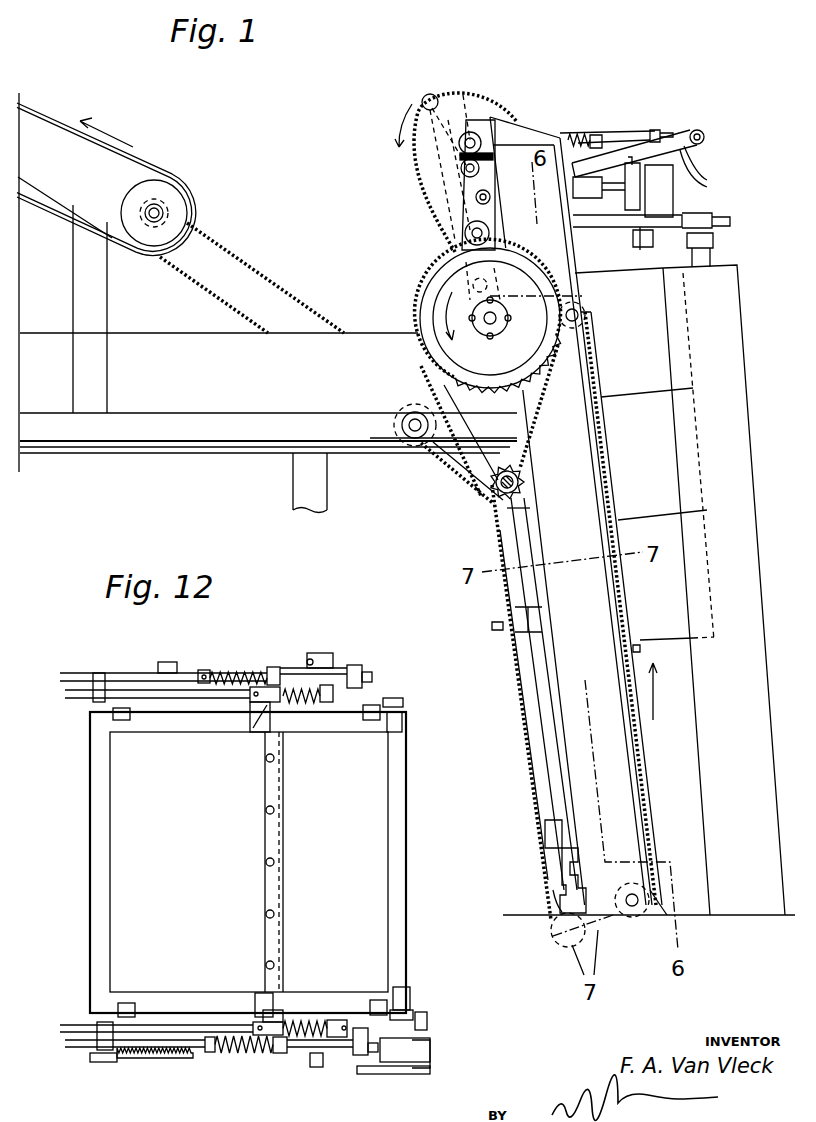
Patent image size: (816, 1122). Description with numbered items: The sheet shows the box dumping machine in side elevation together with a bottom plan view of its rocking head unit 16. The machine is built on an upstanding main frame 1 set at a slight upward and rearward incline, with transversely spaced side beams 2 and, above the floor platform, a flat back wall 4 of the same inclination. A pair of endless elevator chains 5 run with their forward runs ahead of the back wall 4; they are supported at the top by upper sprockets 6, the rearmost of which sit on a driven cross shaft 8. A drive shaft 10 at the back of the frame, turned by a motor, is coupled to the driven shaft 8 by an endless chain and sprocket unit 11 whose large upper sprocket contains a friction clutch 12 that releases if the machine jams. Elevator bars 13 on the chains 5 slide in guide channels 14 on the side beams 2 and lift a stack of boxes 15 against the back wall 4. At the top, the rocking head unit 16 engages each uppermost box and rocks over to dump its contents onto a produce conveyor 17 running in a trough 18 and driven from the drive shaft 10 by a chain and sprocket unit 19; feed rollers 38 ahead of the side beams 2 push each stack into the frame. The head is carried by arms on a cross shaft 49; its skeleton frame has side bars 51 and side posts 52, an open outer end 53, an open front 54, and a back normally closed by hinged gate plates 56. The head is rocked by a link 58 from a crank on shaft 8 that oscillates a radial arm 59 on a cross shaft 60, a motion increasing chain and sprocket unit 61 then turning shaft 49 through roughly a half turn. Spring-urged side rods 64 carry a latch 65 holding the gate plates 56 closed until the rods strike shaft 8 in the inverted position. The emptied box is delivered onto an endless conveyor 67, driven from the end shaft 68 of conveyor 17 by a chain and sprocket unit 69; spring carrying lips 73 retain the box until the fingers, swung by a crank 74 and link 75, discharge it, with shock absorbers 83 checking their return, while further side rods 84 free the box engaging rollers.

In FIG. 1, the main frame 1 is at (556, 116).
In FIG. 1, the side beams 2 is at (540, 770).
In FIG. 1, the back wall 4 is at (537, 716).
In FIG. 1, the elevator chains 5 is at (530, 812).
In FIG. 1, the upper sprockets 6 is at (527, 256).
In FIG. 1, the driven cross shaft 8 is at (493, 322).
In FIG. 1, the drive shaft 10 is at (500, 490).
In FIG. 1, the endless chain and sprocket unit 11 is at (537, 441).
In FIG. 1, the friction clutch 12 is at (437, 328).
In FIG. 1, the elevator bars 13 is at (493, 632).
In FIG. 1, the guide channels 14 is at (646, 777).
In FIG. 1, the stack of boxes 15 is at (710, 658).
In FIG. 1, the rocking head unit 16 is at (708, 157).
In FIG. 12, the rocking head unit 16 is at (424, 991).
In FIG. 1, the produce conveyor 17 is at (242, 455).
In FIG. 1, the trough 18 is at (163, 352).
In FIG. 1, the endless chain and sprocket unit 19 is at (449, 478).
In FIG. 1, the feed rollers 38 is at (733, 292).
In FIG. 1, the cross shaft 49 is at (460, 240).
In FIG. 1, the side bars 51 is at (578, 152).
In FIG. 12, the side bars 51 is at (385, 685).
In FIG. 1, the side posts 52 is at (641, 240).
In FIG. 1, the open outer end 53 is at (698, 204).
In FIG. 1, the open front 54 is at (610, 259).
In FIG. 12, the gate plates 56 is at (133, 899).
In FIG. 1, the link 58 is at (433, 168).
In FIG. 1, the radial oscillating arm 59 is at (466, 92).
In FIG. 1, the cross shaft 60 is at (473, 140).
In FIG. 1, the motion increasing endless chain and sprocket unit 61 is at (433, 202).
In FIG. 12, the side rods 64 is at (198, 700).
In FIG. 12, the latch 65 is at (262, 706).
In FIG. 1, the endless conveyor 67 is at (150, 170).
In FIG. 1, the end shaft 68 is at (413, 436).
In FIG. 1, the endless chain and sprocket unit 69 is at (243, 263).
In FIG. 1, the spring carrying lips 73 is at (705, 182).
In FIG. 12, the crank 74 is at (417, 1063).
In FIG. 1, the link 75 is at (667, 140).
In FIG. 12, the link 75 is at (370, 1075).
In FIG. 1, the shock absorbers 83 is at (575, 196).
In FIG. 1, the side rods 84 is at (619, 133).
In FIG. 12, the side rods 84 is at (288, 665).